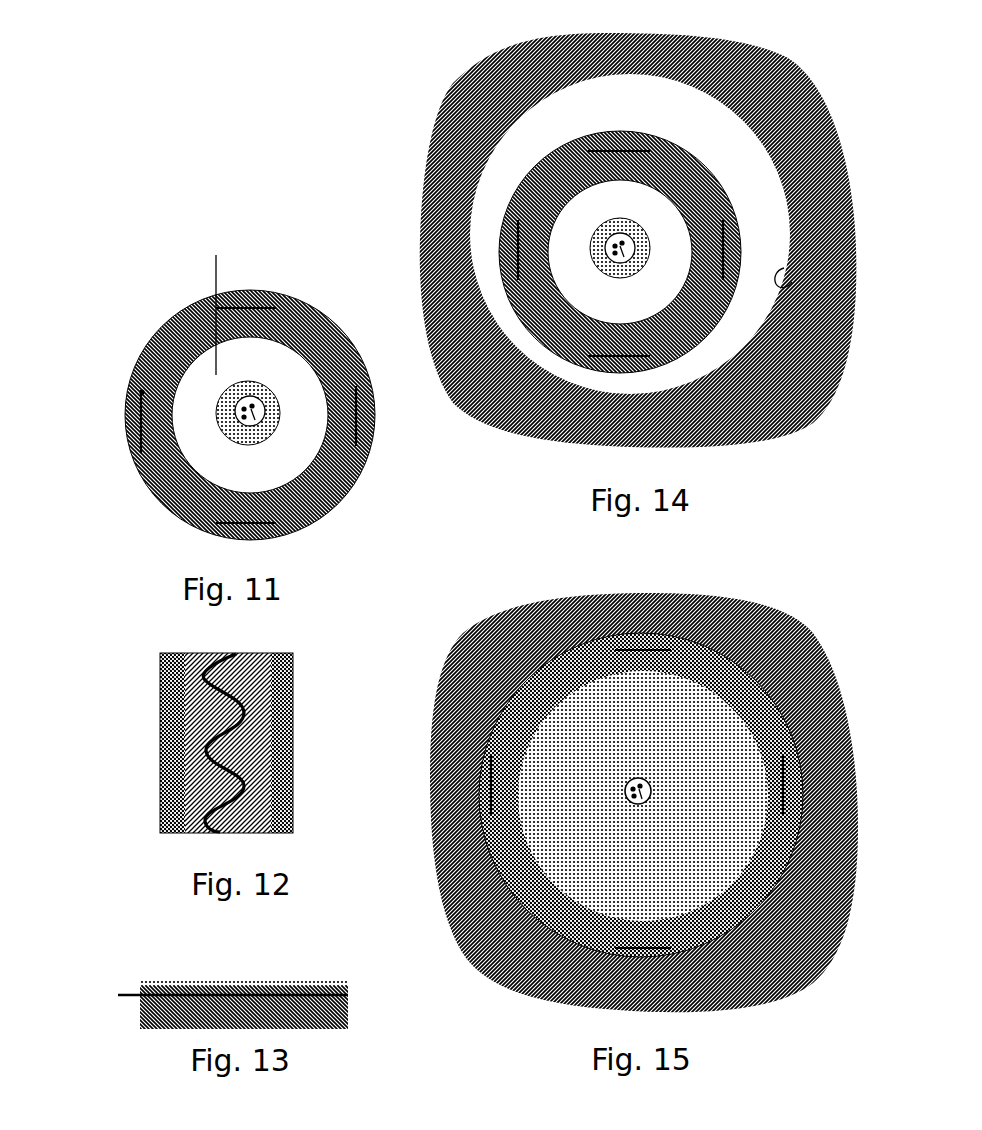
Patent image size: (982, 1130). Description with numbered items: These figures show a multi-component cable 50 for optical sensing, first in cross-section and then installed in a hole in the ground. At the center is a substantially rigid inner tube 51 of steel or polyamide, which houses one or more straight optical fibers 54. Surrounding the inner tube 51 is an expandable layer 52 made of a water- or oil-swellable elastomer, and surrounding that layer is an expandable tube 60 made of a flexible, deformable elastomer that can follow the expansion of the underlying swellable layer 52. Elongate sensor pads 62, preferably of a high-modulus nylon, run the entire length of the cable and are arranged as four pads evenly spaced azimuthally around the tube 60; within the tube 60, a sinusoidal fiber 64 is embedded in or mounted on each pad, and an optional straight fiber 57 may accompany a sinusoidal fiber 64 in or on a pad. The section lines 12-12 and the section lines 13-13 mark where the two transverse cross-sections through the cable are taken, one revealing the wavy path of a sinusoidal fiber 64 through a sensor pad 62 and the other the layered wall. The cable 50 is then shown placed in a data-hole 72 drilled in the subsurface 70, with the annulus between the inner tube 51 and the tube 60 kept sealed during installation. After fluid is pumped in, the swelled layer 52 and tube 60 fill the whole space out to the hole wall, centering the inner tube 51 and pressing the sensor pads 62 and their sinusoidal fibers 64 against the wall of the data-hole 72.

In FIG. 11, the multi-component cable 50 is at (247, 382).
In FIG. 11, the inner tube 51 is at (256, 396).
In FIG. 14, the inner tube 51 is at (627, 237).
In FIG. 15, the inner tube 51 is at (634, 774).
In FIG. 11, the expandable layer 52 is at (243, 436).
In FIG. 14, the expandable layer 52 is at (633, 260).
In FIG. 15, the expandable layer 52 is at (604, 858).
In FIG. 11, the straight optical fibers 54 is at (268, 426).
In FIG. 14, the straight optical fibers 54 is at (620, 248).
In FIG. 15, the straight optical fibers 54 is at (644, 789).
In FIG. 11, the optional straight fiber 57 is at (124, 383).
In FIG. 11, the expandable tube 60 is at (269, 415).
In FIG. 12, the expandable tube 60 is at (250, 743).
In FIG. 13, the expandable tube 60 is at (233, 991).
In FIG. 14, the expandable tube 60 is at (639, 234).
In FIG. 15, the expandable tube 60 is at (641, 795).
In FIG. 11, the sensor pads 62 is at (358, 384).
In FIG. 12, the sensor pads 62 is at (280, 743).
In FIG. 13, the sensor pads 62 is at (268, 974).
In FIG. 14, the sensor pads 62 is at (708, 205).
In FIG. 15, the sensor pads 62 is at (767, 793).
In FIG. 11, the sinusoidal fibers 64 is at (363, 393).
In FIG. 12, the sinusoidal fibers 64 is at (240, 690).
In FIG. 13, the sinusoidal fibers 64 is at (318, 974).
In FIG. 14, the sinusoidal fibers 64 is at (731, 252).
In FIG. 15, the sinusoidal fibers 64 is at (763, 800).
In FIG. 14, the subsurface 70 is at (638, 240).
In FIG. 15, the subsurface 70 is at (644, 802).
In FIG. 14, the data-hole 72 is at (778, 278).
In FIG. 15, the data-hole 72 is at (809, 896).
In FIG. 11, the section lines 12- 12 is at (167, 302).
In FIG. 11, the section lines 13- 13 is at (208, 247).